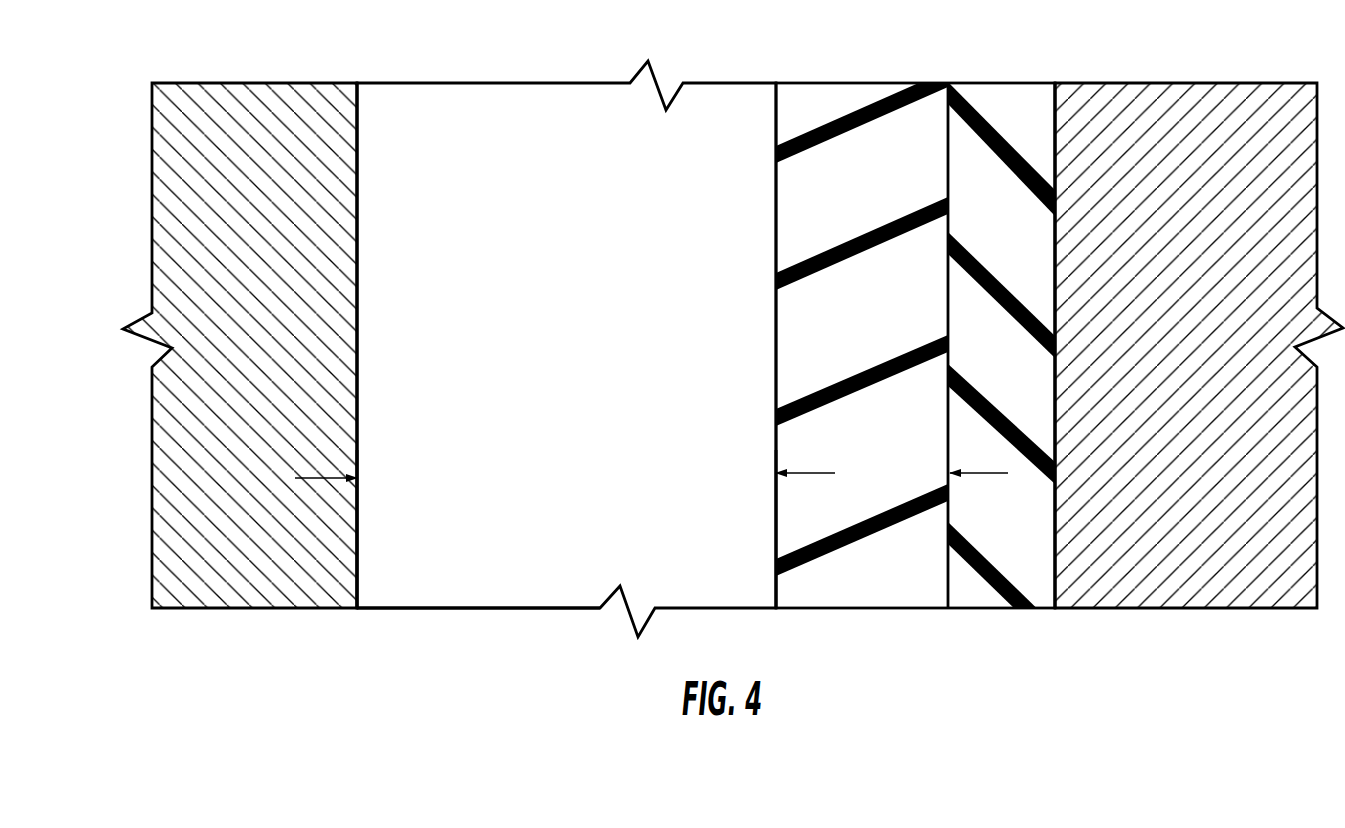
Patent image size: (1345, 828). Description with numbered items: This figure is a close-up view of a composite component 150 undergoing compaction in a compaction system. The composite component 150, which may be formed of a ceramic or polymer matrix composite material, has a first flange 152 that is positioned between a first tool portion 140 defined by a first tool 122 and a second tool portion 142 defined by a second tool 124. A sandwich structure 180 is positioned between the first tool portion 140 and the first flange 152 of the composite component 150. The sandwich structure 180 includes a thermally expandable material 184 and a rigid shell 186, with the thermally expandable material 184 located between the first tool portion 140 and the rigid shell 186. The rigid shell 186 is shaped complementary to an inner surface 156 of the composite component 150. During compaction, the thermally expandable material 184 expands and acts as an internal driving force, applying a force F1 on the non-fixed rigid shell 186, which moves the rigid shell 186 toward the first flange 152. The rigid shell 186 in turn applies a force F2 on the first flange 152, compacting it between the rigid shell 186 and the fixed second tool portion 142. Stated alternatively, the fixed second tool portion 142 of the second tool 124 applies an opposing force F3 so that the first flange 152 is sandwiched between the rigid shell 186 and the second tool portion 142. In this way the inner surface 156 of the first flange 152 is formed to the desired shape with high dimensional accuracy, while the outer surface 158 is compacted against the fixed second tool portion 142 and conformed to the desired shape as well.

The first tool 122 is at (1211, 358).
The second tool 124 is at (272, 438).
The first tool portion 140 is at (1070, 443).
The second tool portion 142 is at (320, 565).
The composite component 150 is at (490, 625).
The first flange 152 is at (569, 273).
The inner surface 156 is at (777, 597).
The outer surface 158 is at (357, 292).
The sandwich structure 180 is at (1055, 73).
The thermally expandable material 184 is at (1021, 239).
The rigid shell 186 is at (883, 300).
The force F1 is at (979, 491).
The force F2 is at (805, 491).
The opposing force F3 is at (326, 497).